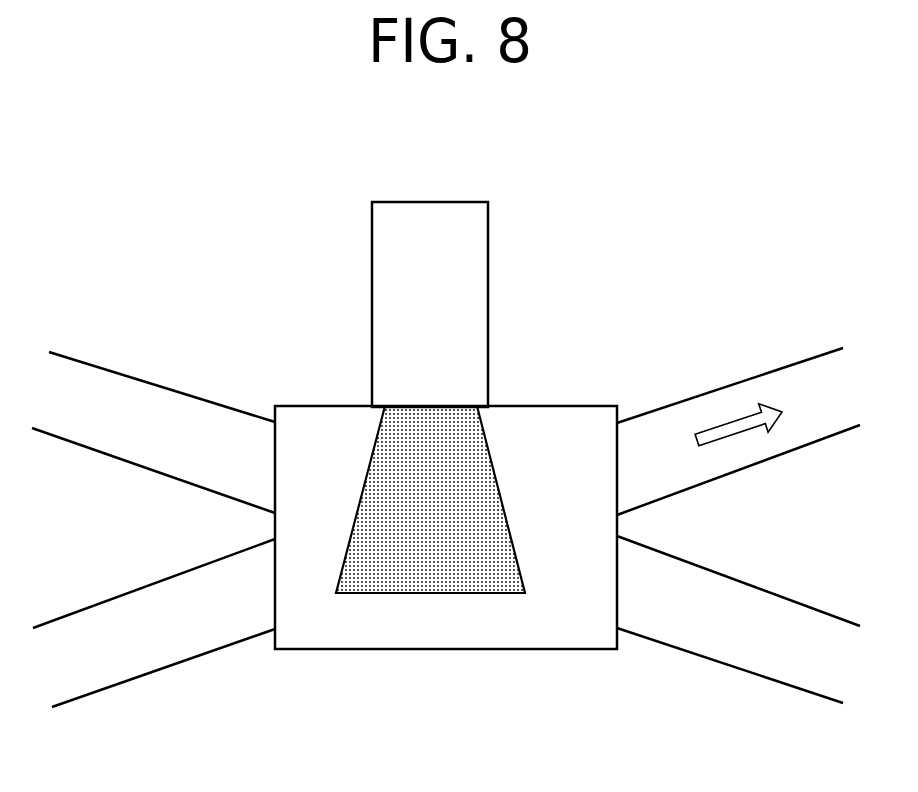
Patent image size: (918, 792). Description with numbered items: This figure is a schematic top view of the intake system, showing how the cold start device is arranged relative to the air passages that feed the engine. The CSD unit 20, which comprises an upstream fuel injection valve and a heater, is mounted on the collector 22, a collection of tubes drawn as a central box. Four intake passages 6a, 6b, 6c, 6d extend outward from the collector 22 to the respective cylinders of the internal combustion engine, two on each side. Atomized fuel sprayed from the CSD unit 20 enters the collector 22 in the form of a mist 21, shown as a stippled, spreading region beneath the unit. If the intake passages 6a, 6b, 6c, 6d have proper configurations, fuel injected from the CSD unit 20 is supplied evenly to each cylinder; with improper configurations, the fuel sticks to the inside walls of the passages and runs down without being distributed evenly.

The CSD unit 20 is at (472, 263).
The mist 21 is at (380, 500).
The collector 22 is at (473, 632).
The intake passage 6a is at (133, 397).
The intake passage 6b is at (728, 420).
The intake passage 6c is at (140, 660).
The intake passage 6d is at (722, 643).